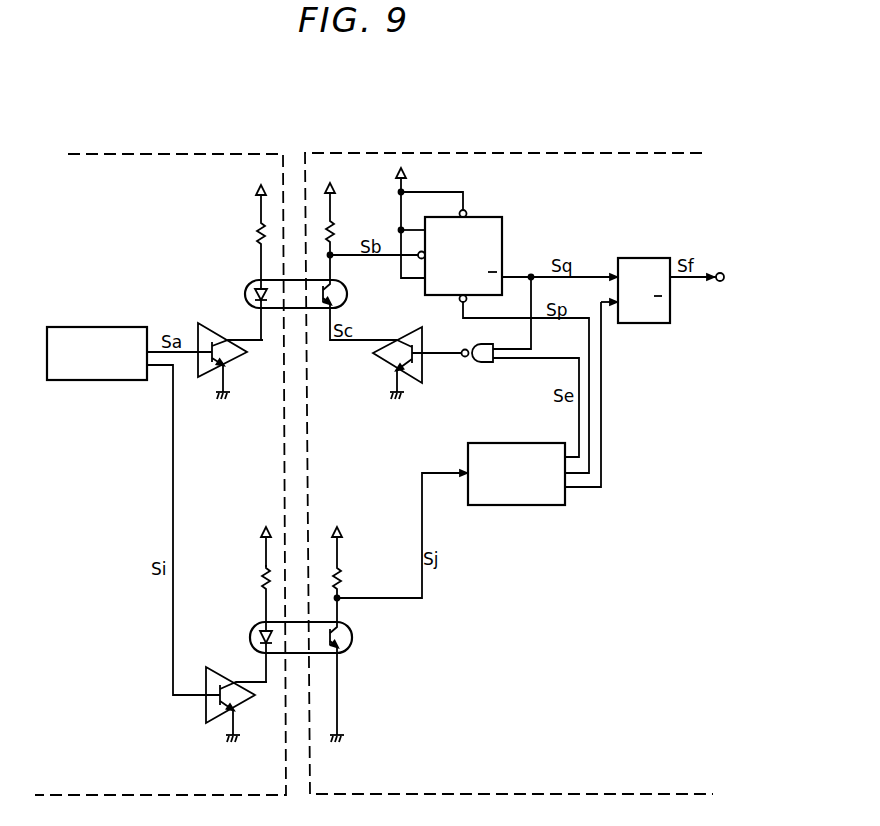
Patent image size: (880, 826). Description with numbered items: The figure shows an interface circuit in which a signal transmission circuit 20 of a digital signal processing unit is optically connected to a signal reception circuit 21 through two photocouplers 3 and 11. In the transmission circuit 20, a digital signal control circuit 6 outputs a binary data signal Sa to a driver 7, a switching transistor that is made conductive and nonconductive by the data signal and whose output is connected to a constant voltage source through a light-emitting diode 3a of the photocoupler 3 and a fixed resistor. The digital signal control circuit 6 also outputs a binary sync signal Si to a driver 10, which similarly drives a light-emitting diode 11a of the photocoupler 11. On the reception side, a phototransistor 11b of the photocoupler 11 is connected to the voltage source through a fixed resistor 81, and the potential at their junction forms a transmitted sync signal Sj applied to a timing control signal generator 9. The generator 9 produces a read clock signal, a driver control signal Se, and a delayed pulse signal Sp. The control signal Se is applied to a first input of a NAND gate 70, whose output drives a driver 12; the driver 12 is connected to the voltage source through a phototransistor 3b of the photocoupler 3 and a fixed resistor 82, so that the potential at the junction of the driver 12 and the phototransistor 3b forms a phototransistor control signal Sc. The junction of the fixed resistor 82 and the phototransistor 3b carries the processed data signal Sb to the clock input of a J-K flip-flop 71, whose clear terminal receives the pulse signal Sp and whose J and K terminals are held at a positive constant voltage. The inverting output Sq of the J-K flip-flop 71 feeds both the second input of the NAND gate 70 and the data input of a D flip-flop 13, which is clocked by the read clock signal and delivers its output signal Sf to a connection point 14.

The signal transmission circuit 20 is at (176, 152).
The signal reception circuit 21 is at (528, 151).
The digital signal control circuit 6 is at (97, 327).
The driver 7 is at (222, 325).
The photocoupler 3 is at (303, 271).
The light-emitting diode 3a is at (252, 294).
The phototransistor 3b is at (348, 292).
The fixed resistor 82 is at (334, 236).
The J-K flip-flop 71 is at (503, 233).
The driver 12 is at (423, 337).
The NAND gate 70 is at (481, 366).
The timing control signal generator 9 is at (517, 442).
The D flip-flop 13 is at (637, 325).
The connection point 14 is at (719, 283).
The driver 10 is at (217, 667).
The photocoupler 11 is at (307, 634).
The light-emitting diode 11a is at (260, 637).
The phototransistor 11b is at (353, 636).
The fixed resistor 81 is at (342, 585).